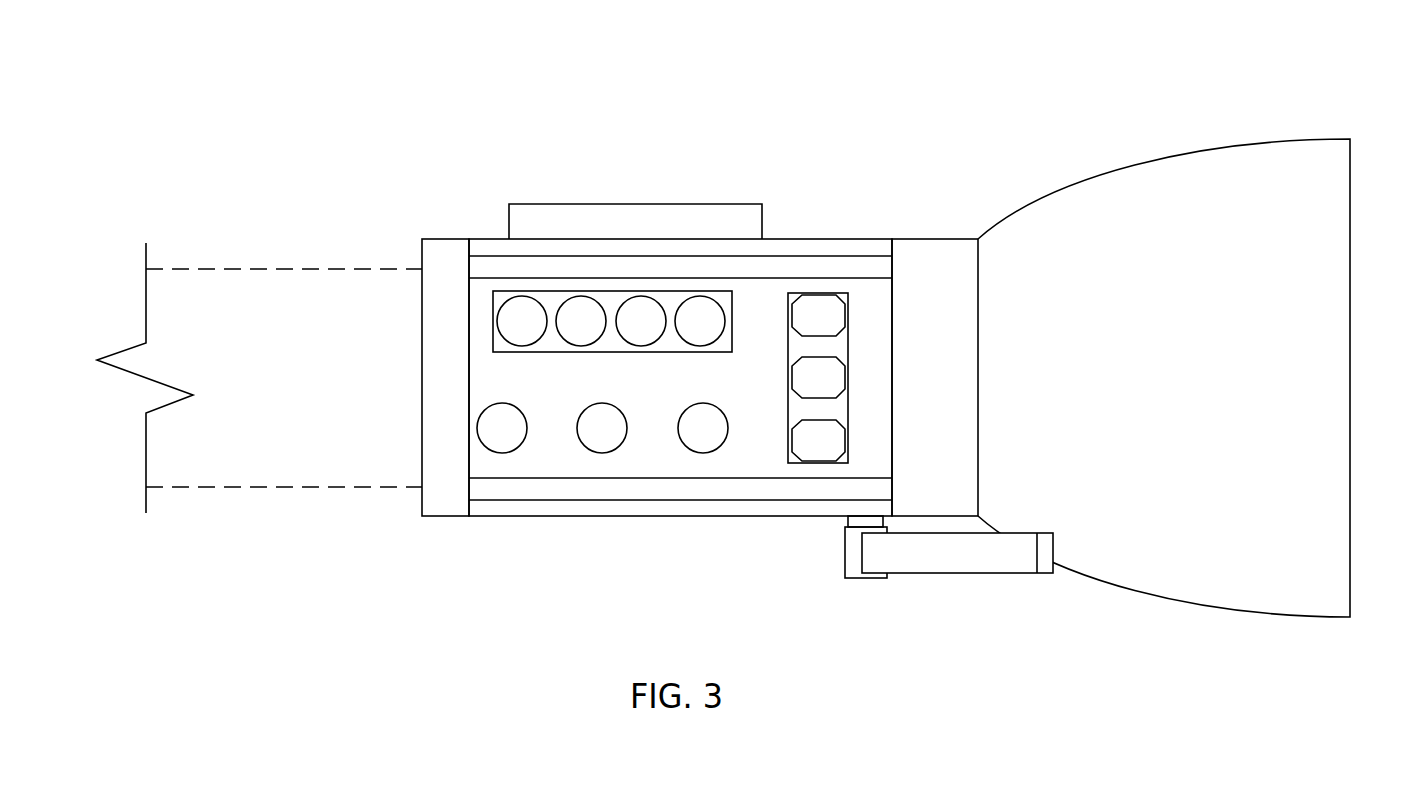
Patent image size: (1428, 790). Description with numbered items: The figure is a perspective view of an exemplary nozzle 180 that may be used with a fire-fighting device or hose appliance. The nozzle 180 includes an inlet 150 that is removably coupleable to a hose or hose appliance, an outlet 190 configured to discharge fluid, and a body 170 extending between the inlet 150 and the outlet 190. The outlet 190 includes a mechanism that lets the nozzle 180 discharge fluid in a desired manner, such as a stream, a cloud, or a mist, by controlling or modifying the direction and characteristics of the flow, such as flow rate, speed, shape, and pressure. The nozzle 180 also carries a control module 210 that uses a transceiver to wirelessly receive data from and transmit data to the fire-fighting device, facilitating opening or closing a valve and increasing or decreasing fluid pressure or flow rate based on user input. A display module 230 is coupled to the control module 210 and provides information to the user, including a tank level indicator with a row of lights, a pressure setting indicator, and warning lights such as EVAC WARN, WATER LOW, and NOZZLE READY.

The inlet 150 is at (418, 548).
The body 170 is at (640, 228).
The nozzle 180 is at (700, 322).
The outlet 190 is at (1333, 112).
The control module 210 is at (543, 228).
The display module 230 is at (813, 238).